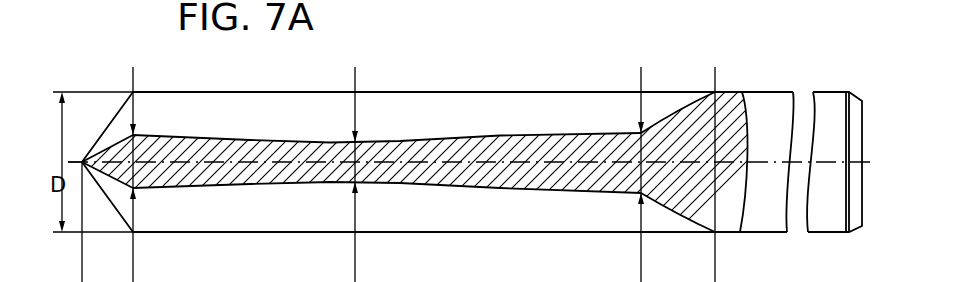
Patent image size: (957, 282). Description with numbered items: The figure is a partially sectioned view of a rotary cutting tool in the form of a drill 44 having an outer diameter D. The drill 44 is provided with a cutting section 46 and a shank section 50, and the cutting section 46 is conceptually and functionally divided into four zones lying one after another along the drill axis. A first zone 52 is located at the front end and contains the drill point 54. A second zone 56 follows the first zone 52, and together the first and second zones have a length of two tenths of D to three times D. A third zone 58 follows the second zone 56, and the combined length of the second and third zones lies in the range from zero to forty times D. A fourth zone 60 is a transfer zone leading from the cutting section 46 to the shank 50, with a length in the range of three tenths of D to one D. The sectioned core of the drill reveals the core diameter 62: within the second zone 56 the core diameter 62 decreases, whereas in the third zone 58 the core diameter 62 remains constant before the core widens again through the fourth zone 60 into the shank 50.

The drill 44 is at (750, 52).
The cutting section 46 is at (542, 92).
The shank section 50 is at (832, 223).
The first zone 52 is at (93, 272).
The drill point 54 is at (82, 162).
The second zone 56 is at (387, 174).
The third zone 58 is at (357, 281).
The fourth zone 60 is at (642, 281).
The core diameter 62 is at (388, 124).